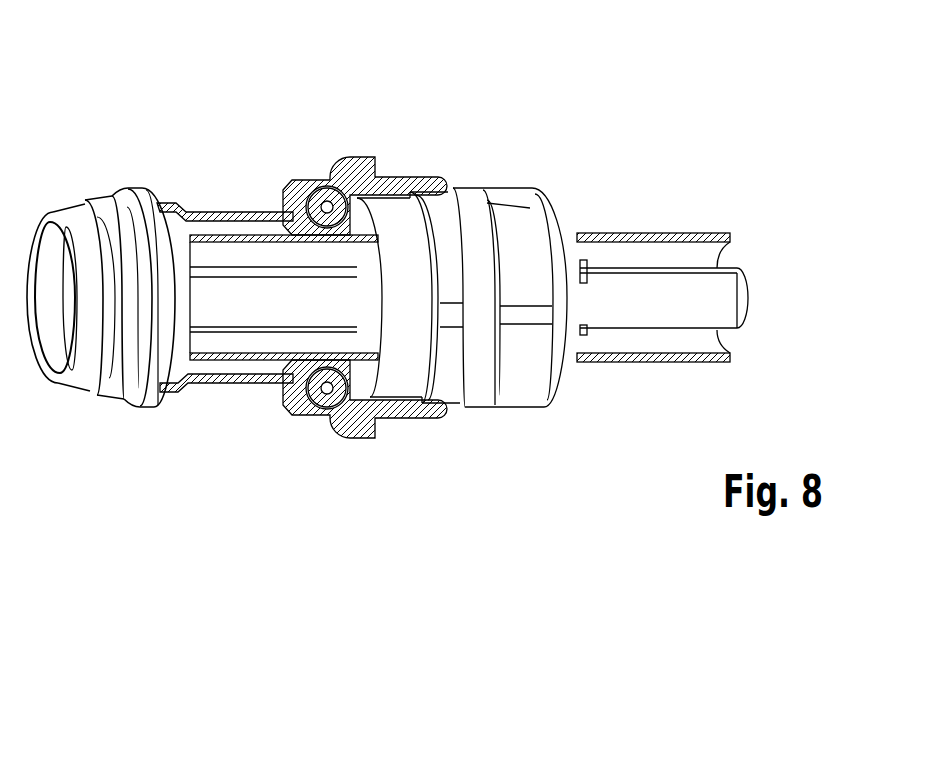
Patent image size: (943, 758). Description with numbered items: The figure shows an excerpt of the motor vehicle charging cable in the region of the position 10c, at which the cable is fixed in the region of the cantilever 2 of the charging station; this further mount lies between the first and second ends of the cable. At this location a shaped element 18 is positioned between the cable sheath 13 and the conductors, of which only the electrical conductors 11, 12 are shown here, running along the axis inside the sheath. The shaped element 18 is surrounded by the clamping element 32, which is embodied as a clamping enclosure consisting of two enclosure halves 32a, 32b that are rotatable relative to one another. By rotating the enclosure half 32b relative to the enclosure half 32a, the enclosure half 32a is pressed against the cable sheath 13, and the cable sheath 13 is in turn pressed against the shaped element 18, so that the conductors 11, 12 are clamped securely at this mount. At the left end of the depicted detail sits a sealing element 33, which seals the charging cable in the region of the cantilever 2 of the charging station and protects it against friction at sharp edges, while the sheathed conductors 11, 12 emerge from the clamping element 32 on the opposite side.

The position 10c is at (423, 277).
The sealing element 33 is at (69, 215).
The cantilever 2 is at (229, 213).
The shaped element 18 is at (363, 311).
The clamping element 32 is at (462, 295).
The enclosure half 32a is at (390, 380).
The enclosure half 32b is at (500, 395).
The electrical conductor 12 is at (723, 272).
The electrical conductor 11 is at (735, 303).
The cable sheath 13 is at (645, 362).